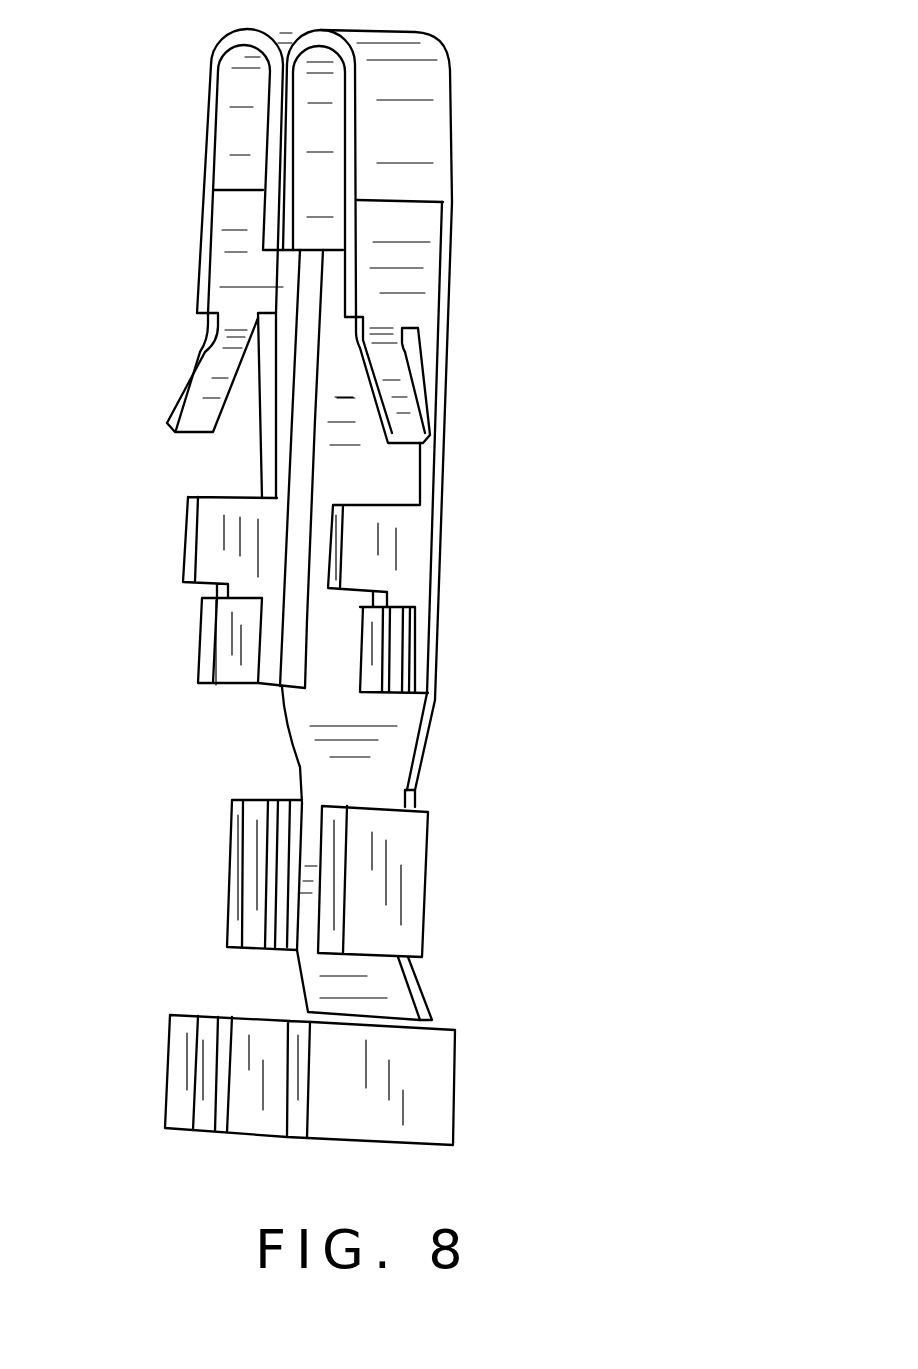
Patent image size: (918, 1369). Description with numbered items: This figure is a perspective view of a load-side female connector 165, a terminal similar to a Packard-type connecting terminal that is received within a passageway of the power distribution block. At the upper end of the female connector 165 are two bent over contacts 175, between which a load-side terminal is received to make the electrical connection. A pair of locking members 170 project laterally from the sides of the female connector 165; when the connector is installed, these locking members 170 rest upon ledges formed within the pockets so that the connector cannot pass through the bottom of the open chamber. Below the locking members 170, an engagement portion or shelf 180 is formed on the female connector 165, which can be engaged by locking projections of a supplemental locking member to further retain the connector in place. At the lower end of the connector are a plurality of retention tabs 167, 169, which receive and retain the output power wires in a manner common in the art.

The load-side female connector 165 is at (482, 256).
The retention tab 167 is at (422, 1115).
The retention tab 169 is at (405, 900).
The locking member 170 is at (152, 424).
The bent over contact 175 is at (247, 37).
The engagement portion or shelf 180 is at (395, 671).